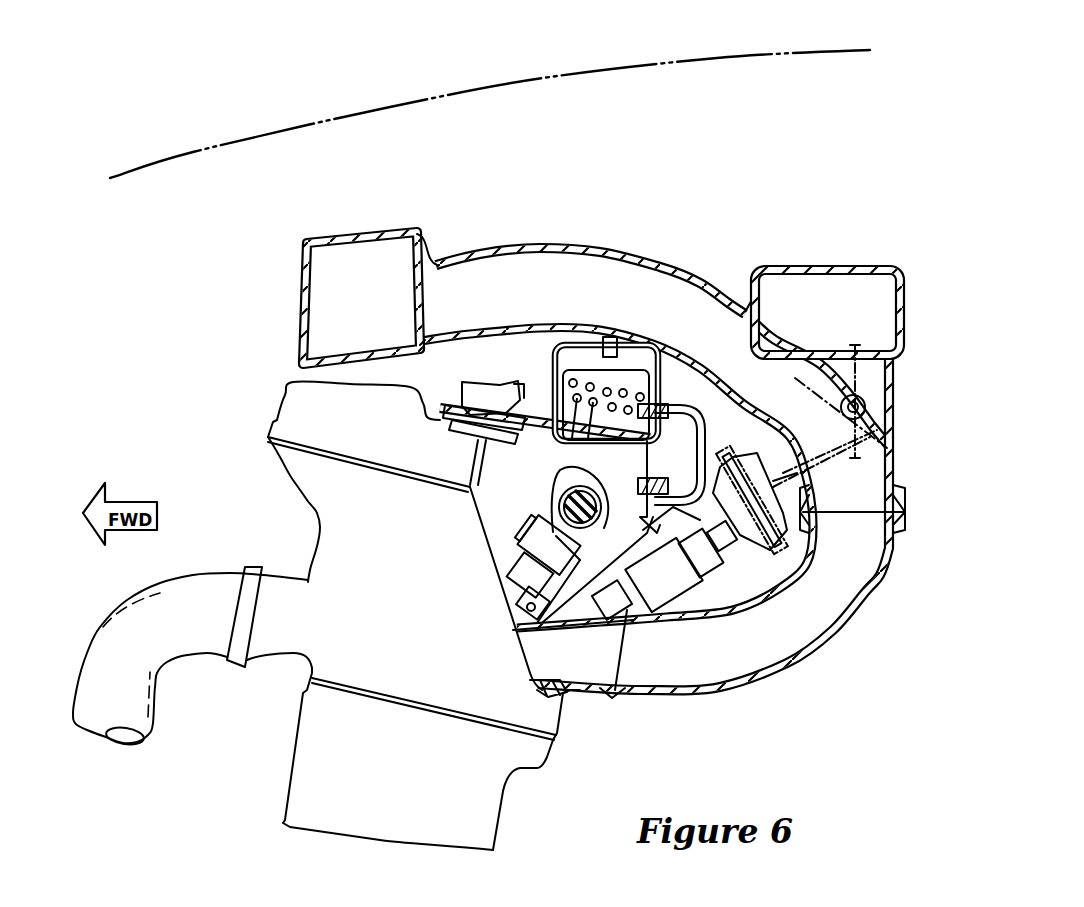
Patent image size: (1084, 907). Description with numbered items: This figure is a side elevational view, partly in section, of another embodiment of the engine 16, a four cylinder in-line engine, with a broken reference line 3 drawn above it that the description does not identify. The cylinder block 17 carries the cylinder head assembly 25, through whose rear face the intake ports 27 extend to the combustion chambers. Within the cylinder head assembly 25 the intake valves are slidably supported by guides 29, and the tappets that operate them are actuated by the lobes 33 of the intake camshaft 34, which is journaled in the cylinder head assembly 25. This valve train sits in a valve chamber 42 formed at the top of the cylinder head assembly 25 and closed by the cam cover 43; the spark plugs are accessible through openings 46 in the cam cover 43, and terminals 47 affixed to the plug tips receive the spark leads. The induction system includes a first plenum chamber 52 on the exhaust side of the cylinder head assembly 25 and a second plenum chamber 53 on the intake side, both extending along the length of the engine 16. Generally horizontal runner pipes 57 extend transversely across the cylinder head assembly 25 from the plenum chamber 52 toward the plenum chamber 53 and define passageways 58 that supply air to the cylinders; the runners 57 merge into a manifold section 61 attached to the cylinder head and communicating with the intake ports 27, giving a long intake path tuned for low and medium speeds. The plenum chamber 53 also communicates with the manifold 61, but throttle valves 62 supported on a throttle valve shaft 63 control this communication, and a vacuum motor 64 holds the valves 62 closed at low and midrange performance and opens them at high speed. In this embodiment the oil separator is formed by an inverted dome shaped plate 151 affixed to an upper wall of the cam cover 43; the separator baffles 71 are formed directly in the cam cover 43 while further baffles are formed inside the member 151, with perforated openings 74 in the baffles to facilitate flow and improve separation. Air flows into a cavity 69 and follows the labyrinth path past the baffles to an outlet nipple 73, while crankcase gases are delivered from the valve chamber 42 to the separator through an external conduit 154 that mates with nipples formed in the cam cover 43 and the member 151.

The fairing outline 3 is at (510, 118).
The engine 16 is at (220, 483).
The cylinder block 17 is at (490, 828).
The cylinder head assembly 25 is at (335, 562).
The intake ports 27 is at (573, 663).
The guides 29 is at (510, 600).
The lobes 33 is at (553, 493).
The intake camshaft 34 is at (547, 510).
The valve chamber 42 is at (543, 413).
The cam cover 43 is at (312, 408).
The openings 46 is at (498, 432).
The terminals 47 is at (445, 409).
The first plenum chamber 52 is at (303, 290).
The second plenum chamber 53 is at (818, 288).
The runner pipes 57 is at (682, 272).
The passageways 58 is at (518, 288).
The manifold section 61 is at (810, 627).
The throttle valves 62 is at (827, 378).
The throttle valve shaft 63 is at (842, 402).
The vacuum motor 64 is at (750, 540).
The cavity 69 is at (632, 372).
The separator baffles 71 is at (607, 447).
The outlet nipple 73 is at (613, 340).
The perforations 74 is at (545, 425).
The inverted dome shaped plate 151 is at (566, 340).
The external conduit 154 is at (698, 458).